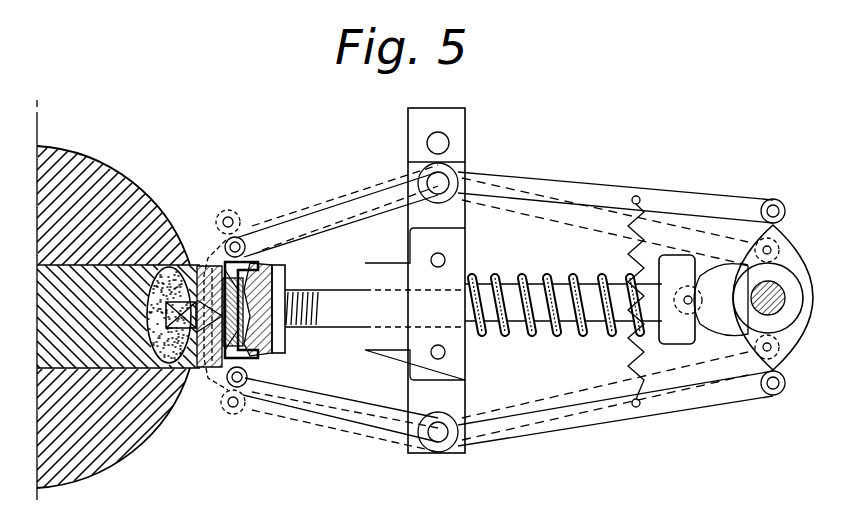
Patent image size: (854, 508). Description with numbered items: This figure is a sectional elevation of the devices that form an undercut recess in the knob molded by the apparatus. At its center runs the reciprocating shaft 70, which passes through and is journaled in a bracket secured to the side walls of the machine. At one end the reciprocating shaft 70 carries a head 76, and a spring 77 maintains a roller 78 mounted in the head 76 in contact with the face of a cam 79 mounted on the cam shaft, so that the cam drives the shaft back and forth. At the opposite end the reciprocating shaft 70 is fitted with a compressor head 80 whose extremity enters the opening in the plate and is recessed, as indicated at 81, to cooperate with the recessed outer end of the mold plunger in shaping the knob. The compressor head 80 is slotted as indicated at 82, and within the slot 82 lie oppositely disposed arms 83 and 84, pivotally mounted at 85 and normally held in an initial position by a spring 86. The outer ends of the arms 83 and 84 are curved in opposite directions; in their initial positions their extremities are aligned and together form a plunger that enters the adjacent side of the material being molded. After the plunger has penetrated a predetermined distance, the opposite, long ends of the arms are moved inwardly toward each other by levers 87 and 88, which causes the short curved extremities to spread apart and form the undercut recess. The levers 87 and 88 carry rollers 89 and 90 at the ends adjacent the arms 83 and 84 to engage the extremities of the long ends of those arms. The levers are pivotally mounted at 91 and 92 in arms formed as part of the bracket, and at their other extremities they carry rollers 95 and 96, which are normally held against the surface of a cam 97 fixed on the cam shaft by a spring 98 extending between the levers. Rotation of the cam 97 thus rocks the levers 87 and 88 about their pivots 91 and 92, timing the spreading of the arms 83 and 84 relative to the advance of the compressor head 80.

The reciprocating shaft 70 is at (348, 316).
The head 76 is at (670, 266).
The spring 77 is at (548, 275).
The roller 78 is at (724, 276).
The cam 79 is at (726, 318).
The compressor head 80 is at (274, 278).
The recess 81 is at (198, 262).
The slot 82 is at (258, 262).
The arm 83 is at (237, 238).
The arm 84 is at (245, 387).
The pivot 85 is at (200, 378).
The spring 86 is at (262, 360).
The lever 87 is at (527, 186).
The lever 88 is at (560, 428).
The roller 89 is at (226, 210).
The roller 90 is at (236, 414).
The pivot 91 is at (445, 178).
The pivot 92 is at (438, 442).
The roller 95 is at (773, 199).
The roller 96 is at (773, 395).
The cam 97 is at (783, 360).
The spring 98 is at (615, 301).